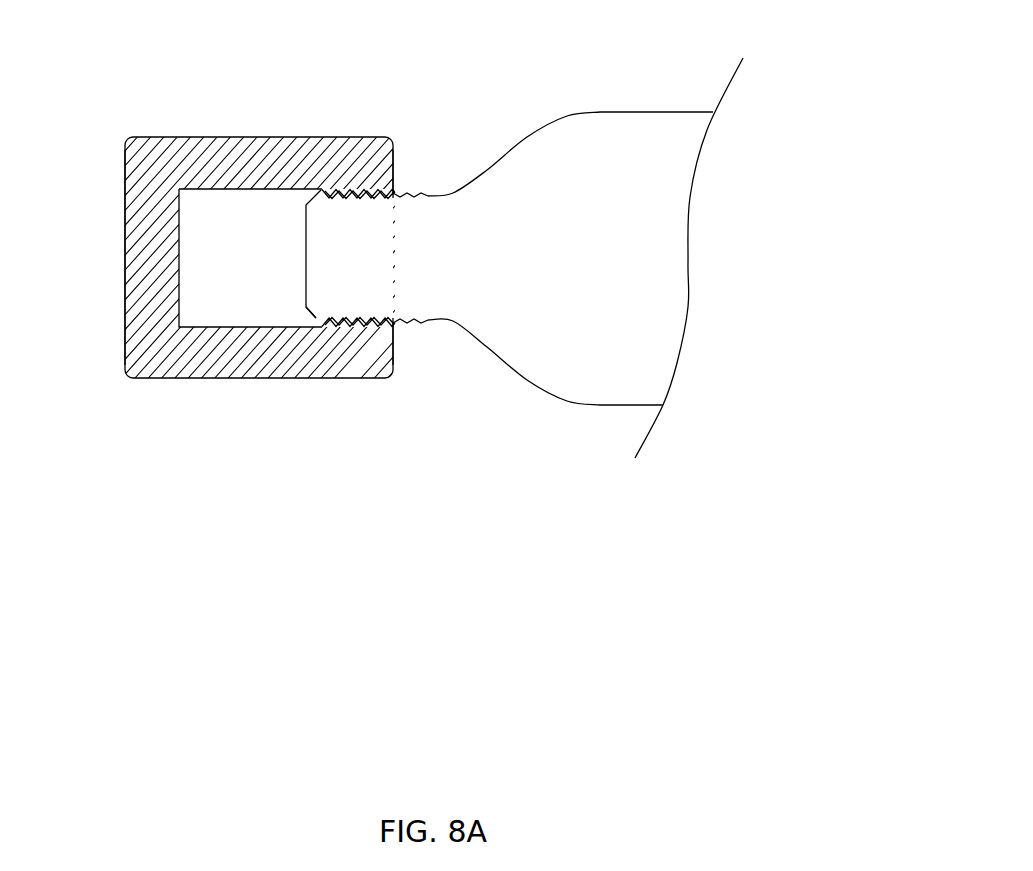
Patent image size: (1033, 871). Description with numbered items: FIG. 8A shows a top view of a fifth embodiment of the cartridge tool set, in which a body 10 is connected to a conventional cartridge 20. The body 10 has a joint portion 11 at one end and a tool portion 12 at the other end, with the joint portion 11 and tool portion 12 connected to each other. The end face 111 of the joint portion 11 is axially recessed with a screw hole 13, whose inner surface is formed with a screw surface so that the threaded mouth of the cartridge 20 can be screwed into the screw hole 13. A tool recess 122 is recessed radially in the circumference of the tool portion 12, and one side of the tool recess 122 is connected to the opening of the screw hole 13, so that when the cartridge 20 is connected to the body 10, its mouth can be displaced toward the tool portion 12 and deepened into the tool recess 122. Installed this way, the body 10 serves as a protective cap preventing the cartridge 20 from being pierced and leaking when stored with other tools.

The body 10 is at (259, 137).
The joint portion 11 is at (381, 135).
The end face 111 is at (394, 165).
The tool portion 12 is at (137, 136).
The tool recess 122 is at (181, 264).
The screw hole 13 is at (315, 318).
The cartridge 20 is at (660, 112).